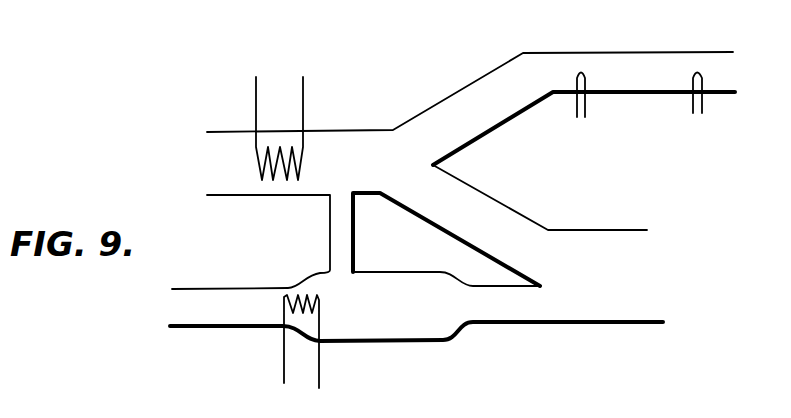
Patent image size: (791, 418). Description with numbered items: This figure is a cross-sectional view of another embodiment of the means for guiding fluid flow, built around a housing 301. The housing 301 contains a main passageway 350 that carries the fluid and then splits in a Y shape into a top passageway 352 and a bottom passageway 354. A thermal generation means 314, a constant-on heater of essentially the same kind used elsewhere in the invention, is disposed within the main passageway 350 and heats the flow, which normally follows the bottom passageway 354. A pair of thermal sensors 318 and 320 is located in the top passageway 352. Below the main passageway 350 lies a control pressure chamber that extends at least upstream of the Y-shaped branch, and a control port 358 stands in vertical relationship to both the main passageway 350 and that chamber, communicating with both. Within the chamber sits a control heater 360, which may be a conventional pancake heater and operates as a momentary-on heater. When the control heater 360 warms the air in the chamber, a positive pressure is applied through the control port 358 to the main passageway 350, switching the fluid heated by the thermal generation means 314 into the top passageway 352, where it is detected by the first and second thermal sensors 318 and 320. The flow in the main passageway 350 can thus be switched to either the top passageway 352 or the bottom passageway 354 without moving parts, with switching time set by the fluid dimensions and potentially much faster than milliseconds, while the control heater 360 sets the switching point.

The housing 301 is at (398, 109).
The thermal generation means 314 is at (258, 164).
The thermal sensor 318 is at (580, 70).
The thermal sensor 320 is at (696, 70).
The main passageway 350 is at (329, 167).
The top passageway 352 is at (630, 60).
The bottom passageway 354 is at (625, 280).
The control port 358 is at (345, 240).
The control heater 360 is at (287, 297).